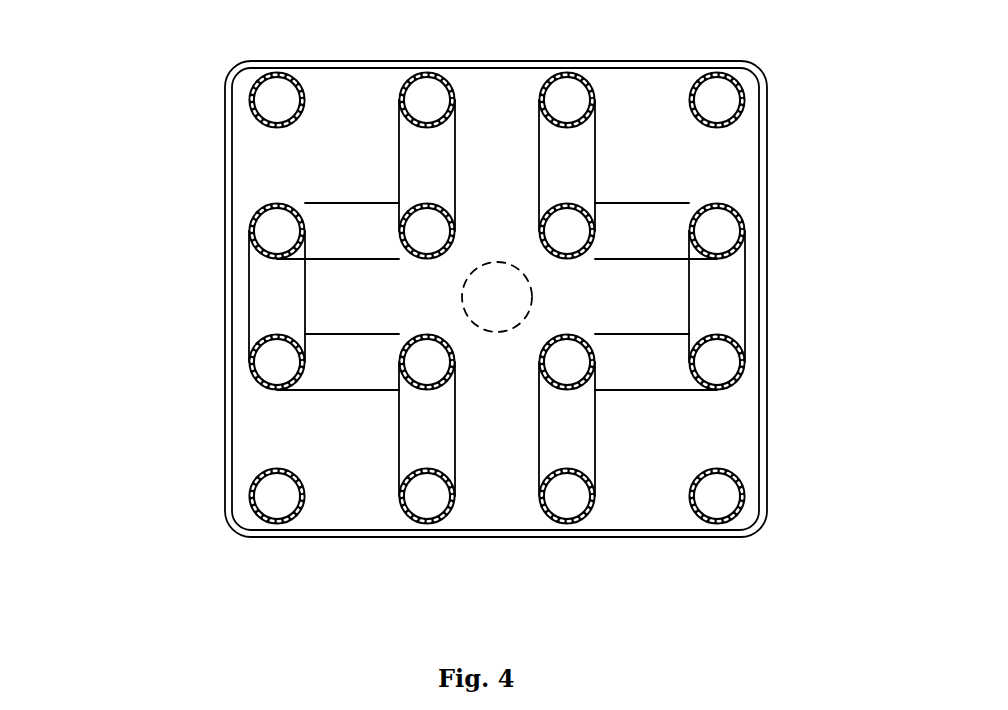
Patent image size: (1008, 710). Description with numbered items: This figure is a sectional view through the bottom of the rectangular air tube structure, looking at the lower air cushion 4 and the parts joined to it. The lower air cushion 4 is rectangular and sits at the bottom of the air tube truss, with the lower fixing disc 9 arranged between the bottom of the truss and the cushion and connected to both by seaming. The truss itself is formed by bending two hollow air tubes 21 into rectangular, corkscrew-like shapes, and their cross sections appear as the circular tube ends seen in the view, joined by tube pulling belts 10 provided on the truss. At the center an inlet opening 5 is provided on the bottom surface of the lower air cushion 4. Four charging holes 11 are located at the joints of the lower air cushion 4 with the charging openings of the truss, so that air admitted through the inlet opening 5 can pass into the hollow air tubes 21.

The lower air cushion 4 is at (560, 299).
The inlet opening 5 is at (677, 226).
The lower fixing disc 9 is at (564, 299).
The tube pulling belt 10 is at (377, 343).
The charging hole 11 is at (470, 295).
The hollow air tube 21 is at (466, 332).